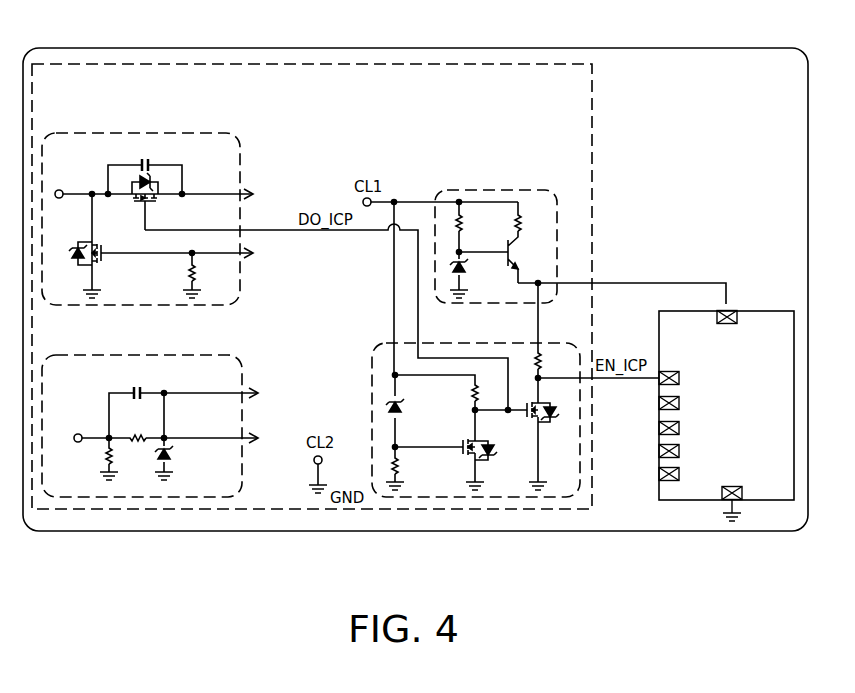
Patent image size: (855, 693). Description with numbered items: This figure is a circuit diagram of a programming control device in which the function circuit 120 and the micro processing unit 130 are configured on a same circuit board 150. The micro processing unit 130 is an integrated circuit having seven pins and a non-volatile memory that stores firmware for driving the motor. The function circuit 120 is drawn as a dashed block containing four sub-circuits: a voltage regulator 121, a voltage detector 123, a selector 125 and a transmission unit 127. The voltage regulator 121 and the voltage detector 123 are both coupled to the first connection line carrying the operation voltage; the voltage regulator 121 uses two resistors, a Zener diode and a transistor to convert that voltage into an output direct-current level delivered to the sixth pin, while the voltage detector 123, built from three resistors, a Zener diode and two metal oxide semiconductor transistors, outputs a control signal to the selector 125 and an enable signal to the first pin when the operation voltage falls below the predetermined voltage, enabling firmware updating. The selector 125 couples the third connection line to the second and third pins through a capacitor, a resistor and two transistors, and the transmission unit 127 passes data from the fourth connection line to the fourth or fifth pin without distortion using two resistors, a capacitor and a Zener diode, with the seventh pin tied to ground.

The circuit board 150 is at (700, 48).
The function circuit 120 is at (592, 107).
The voltage regulator 121 is at (495, 190).
The voltage detector 123 is at (448, 343).
The selector 125 is at (240, 157).
The transmission unit 127 is at (180, 355).
The micro processing unit 130 is at (755, 311).